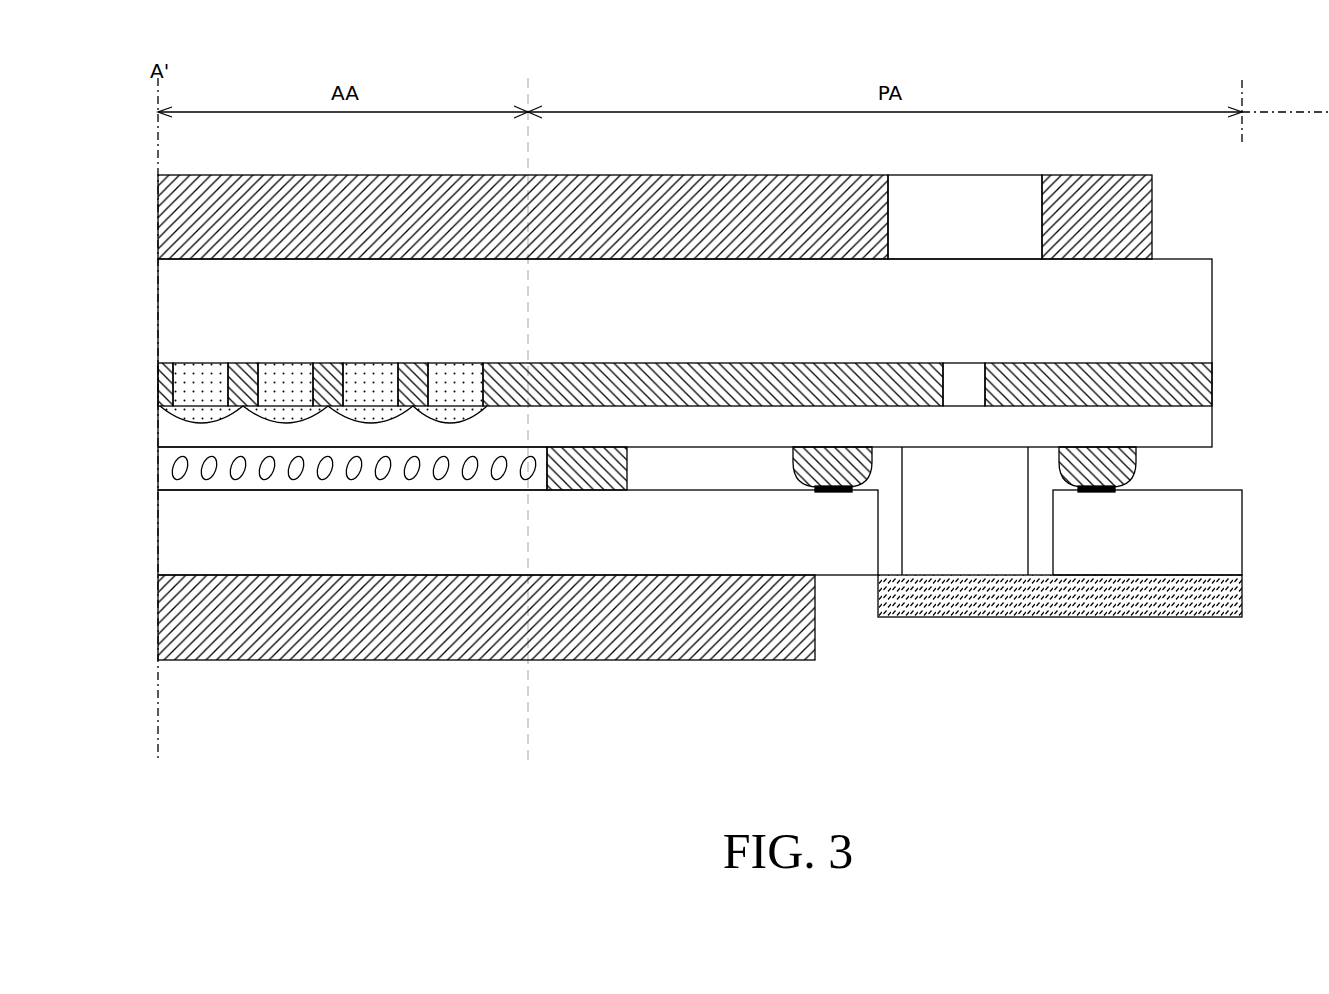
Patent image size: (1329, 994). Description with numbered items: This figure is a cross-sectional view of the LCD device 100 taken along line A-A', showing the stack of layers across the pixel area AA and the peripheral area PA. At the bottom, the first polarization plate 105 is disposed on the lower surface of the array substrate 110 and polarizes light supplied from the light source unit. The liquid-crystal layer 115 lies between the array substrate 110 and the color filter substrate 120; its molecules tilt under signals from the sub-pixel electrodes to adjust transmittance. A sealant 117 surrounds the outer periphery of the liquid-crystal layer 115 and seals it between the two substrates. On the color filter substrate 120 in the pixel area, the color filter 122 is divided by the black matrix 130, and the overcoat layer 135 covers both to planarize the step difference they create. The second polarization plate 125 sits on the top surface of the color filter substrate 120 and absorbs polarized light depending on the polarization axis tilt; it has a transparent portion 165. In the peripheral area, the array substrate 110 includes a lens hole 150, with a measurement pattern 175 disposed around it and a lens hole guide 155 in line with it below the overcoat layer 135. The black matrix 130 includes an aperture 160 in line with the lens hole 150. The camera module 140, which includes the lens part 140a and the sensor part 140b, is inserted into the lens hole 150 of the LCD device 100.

The LCD device 100 is at (1258, 22).
The first polarization plate 105 is at (700, 640).
The array substrate 110 is at (1208, 543).
The liquid-crystal layer 115 is at (453, 480).
The sealant 117 is at (585, 468).
The color filter substrate 120 is at (1178, 296).
The color filter 122 is at (190, 378).
The second polarization plate 125 is at (1123, 218).
The black matrix 130 is at (1182, 384).
The overcoat layer 135 is at (183, 432).
The camera module 140 is at (1005, 690).
The lens part 140a is at (990, 545).
The sensor part 140b is at (929, 600).
The lens hole 150 is at (872, 547).
The lens hole guide 155 is at (1115, 463).
The aperture 160 is at (968, 360).
The transparent portion 165 is at (999, 189).
The measurement pattern 175 is at (1100, 490).